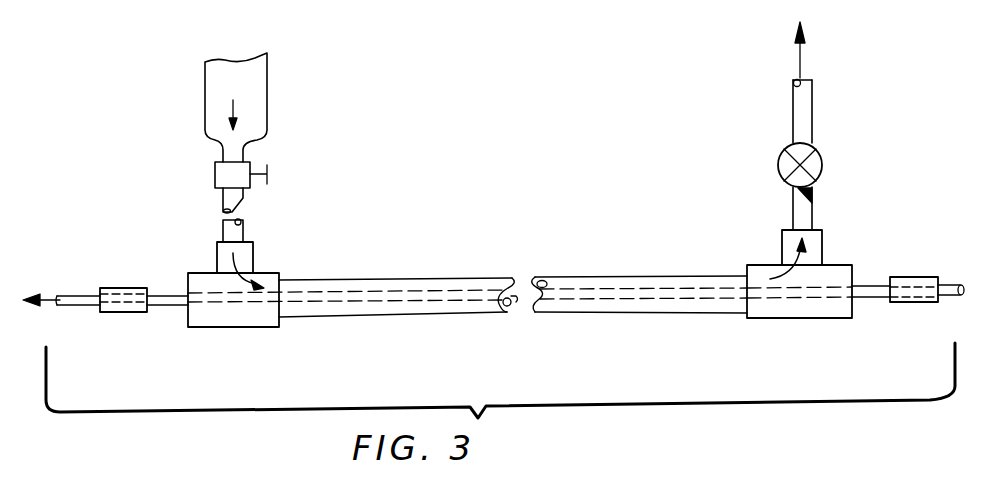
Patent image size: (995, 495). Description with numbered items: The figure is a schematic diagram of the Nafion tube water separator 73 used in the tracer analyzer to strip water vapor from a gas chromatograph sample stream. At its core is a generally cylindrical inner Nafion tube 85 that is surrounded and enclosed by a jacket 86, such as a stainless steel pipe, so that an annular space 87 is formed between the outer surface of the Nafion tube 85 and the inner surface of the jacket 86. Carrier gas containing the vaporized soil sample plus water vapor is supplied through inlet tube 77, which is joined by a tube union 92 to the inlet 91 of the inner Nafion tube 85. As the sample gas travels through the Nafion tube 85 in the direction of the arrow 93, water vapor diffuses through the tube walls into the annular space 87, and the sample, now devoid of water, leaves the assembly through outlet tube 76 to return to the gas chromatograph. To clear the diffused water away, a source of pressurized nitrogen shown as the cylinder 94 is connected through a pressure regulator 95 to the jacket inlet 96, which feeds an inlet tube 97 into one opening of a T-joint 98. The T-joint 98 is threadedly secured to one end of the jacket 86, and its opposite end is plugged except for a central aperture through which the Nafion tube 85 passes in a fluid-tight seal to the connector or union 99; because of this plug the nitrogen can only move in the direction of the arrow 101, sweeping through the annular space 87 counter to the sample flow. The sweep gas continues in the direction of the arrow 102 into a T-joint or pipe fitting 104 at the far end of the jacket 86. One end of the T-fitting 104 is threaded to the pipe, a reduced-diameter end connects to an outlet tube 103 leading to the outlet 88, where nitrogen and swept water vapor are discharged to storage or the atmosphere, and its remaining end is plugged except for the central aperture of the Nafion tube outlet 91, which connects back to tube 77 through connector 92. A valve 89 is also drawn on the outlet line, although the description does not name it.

The Nafion tube water separator 73 is at (128, 128).
The outlet tube 76 is at (77, 295).
The inlet tube 77 is at (940, 277).
The Nafion tube 85 is at (408, 302).
The jacket 86 is at (445, 316).
The annular space 87 is at (677, 303).
The outlet 88 is at (812, 80).
The valve 89 is at (823, 165).
The inlet to the inner Nafion tube 91 is at (877, 298).
The tube union 92 is at (900, 303).
The arrow 93 is at (45, 303).
The cylinder 94 is at (217, 72).
The pressure regulator 95 is at (267, 172).
The jacket inlet 96 is at (240, 220).
The inlet tube 97 is at (218, 230).
The T-joint 98 is at (213, 327).
The connector or union 99 is at (133, 312).
The arrow 101 is at (217, 255).
The arrow 102 is at (793, 265).
The outlet tube 103 is at (793, 115).
The T-joint or pipe fitting 104 is at (777, 318).